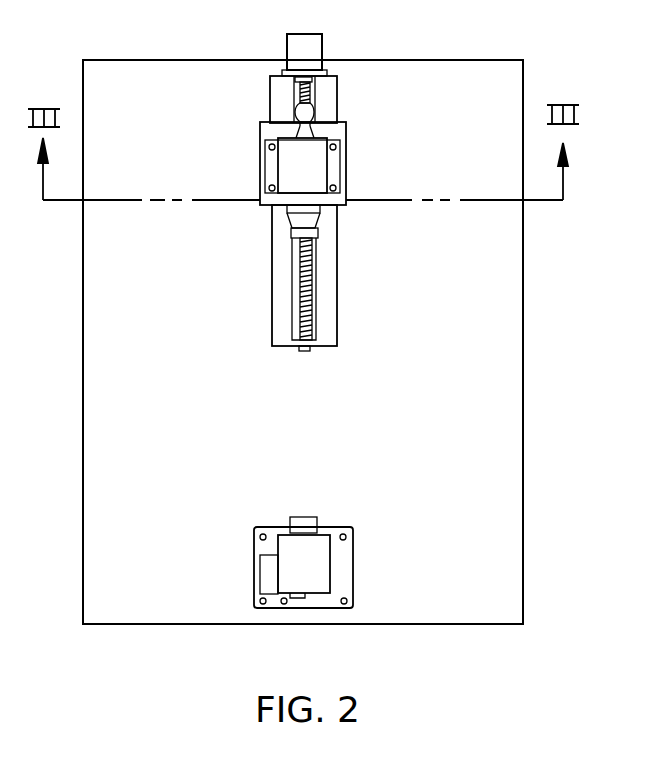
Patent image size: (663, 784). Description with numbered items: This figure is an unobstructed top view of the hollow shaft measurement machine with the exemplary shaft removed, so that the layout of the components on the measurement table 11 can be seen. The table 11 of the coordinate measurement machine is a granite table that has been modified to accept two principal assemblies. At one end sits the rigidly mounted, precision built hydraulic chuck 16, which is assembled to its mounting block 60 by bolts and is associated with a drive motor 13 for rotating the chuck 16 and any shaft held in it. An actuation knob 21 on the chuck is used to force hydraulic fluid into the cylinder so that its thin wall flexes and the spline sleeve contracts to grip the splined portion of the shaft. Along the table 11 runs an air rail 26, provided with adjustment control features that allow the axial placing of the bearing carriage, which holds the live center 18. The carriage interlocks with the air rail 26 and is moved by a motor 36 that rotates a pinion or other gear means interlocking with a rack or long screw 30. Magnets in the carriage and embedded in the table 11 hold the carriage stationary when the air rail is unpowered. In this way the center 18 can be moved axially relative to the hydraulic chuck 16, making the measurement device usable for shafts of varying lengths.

The table 11 is at (524, 463).
The drive motor 13 is at (270, 583).
The hydraulic chuck 16 is at (310, 525).
The live center 18 is at (305, 219).
The actuation knob 21 is at (297, 605).
The air rail 26 is at (328, 282).
The long screw 30 is at (320, 346).
The motor 36 is at (308, 43).
The mounting block 60 is at (267, 546).